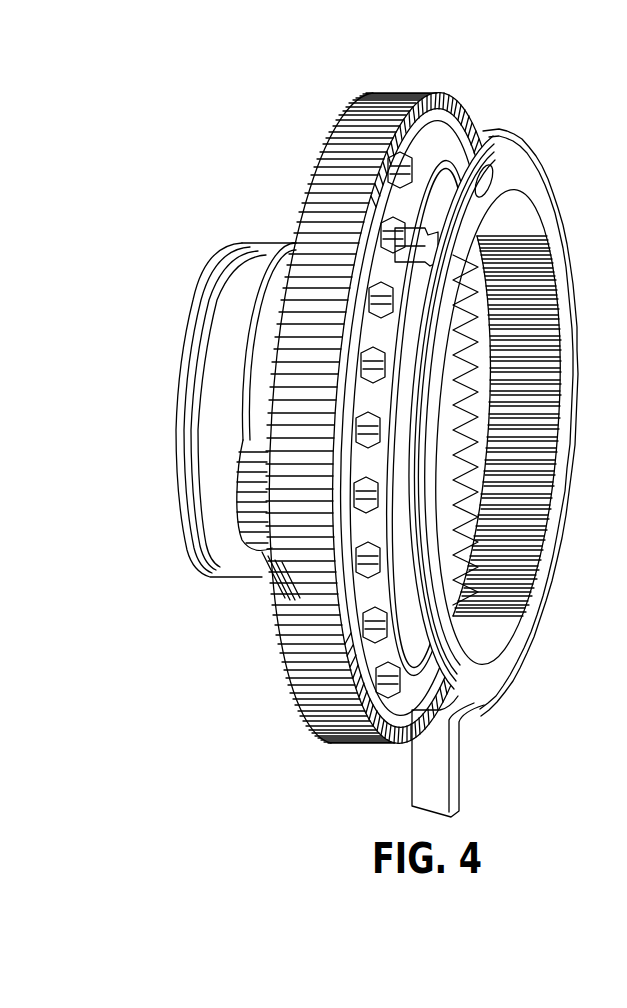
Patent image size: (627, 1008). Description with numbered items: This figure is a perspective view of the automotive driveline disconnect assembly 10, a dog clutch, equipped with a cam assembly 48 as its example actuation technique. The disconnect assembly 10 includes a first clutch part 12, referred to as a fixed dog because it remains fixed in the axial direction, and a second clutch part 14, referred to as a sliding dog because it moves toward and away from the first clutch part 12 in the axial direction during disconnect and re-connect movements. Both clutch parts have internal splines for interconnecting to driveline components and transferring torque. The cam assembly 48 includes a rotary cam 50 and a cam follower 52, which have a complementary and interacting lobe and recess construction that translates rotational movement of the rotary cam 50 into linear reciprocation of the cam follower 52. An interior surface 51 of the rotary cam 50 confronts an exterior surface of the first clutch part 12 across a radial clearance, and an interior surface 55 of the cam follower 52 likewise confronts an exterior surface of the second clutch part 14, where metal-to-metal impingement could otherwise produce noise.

The disconnect assembly 10 is at (247, 188).
The first clutch part 12 is at (190, 313).
The second clutch part 14 is at (568, 207).
The cam assembly 48 is at (362, 763).
The rotary cam 50 is at (285, 683).
The interior surface 51 is at (395, 222).
The cam follower 52 is at (468, 733).
The interior surface 55 is at (490, 170).